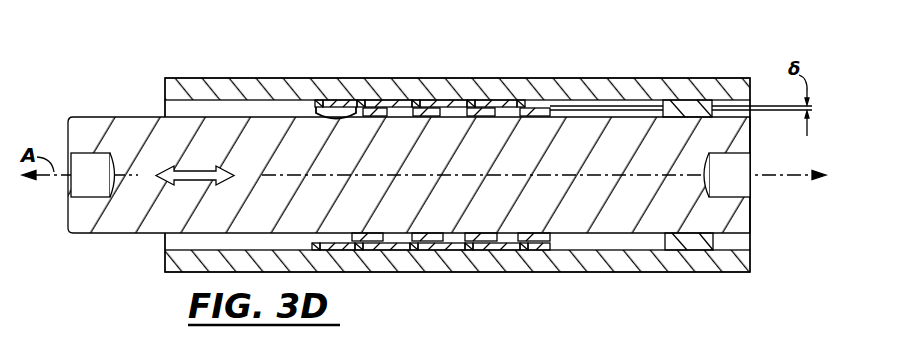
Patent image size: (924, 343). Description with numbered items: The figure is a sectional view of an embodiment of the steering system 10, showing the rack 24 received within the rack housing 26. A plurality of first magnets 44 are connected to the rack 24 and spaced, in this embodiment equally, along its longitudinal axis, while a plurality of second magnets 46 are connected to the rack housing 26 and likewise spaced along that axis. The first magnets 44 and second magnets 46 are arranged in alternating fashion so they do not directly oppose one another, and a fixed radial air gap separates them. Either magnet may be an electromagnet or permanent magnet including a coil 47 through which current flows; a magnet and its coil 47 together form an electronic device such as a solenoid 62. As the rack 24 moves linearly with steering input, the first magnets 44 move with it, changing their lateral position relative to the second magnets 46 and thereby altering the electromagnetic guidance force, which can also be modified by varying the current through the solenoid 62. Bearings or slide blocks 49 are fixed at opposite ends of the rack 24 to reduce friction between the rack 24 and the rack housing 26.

The steering system 10 is at (118, 74).
The rack 24 is at (625, 200).
The rack housing 26 is at (618, 85).
The first magnets 44 is at (367, 240).
The second magnets 46 is at (337, 102).
The coil 47 is at (313, 105).
The slide blocks 49 is at (687, 102).
The solenoid 62 is at (337, 120).